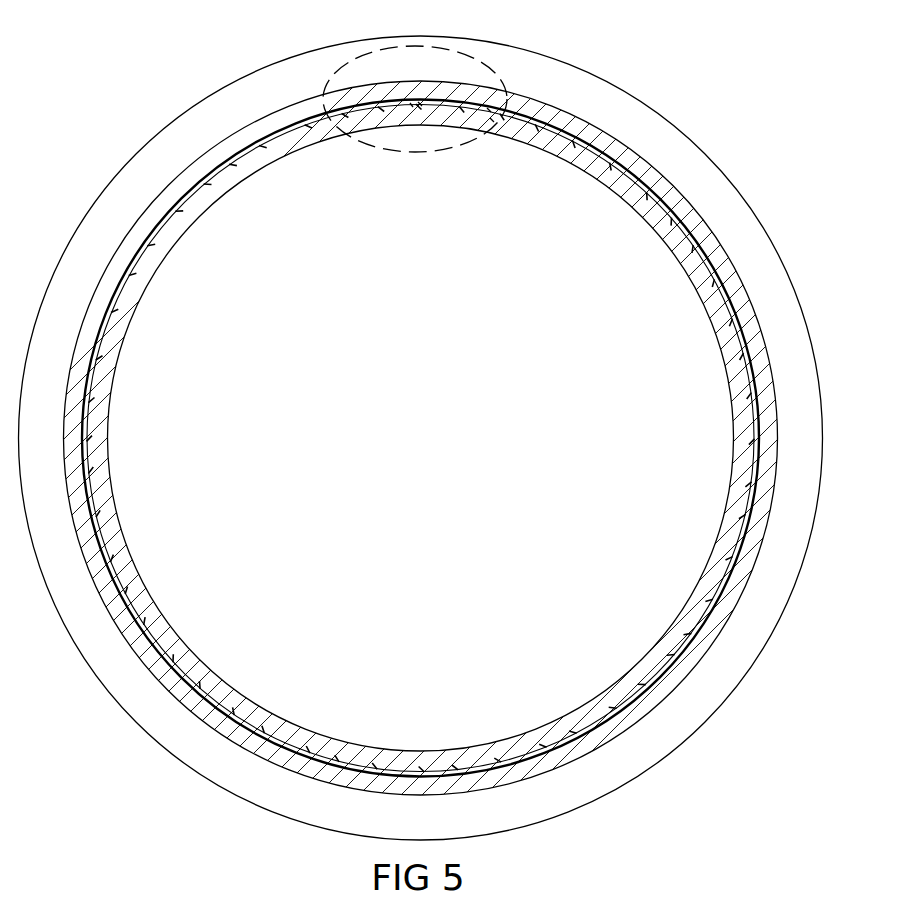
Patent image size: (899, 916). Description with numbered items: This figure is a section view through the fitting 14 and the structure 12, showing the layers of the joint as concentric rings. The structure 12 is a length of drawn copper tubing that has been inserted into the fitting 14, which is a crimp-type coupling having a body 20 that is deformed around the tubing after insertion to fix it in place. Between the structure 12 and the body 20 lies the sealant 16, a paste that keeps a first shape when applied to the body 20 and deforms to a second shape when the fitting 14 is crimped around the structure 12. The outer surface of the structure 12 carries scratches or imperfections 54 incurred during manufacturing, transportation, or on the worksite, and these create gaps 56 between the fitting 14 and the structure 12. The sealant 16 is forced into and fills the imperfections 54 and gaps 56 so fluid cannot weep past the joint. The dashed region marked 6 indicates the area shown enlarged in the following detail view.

The detail region of FIG. 6 is at (495, 67).
The structure 12 is at (612, 178).
The fitting 14 is at (577, 127).
The sealant 16 is at (313, 127).
The body 20 is at (228, 152).
The imperfections 54 is at (420, 105).
The gaps 56 is at (412, 105).